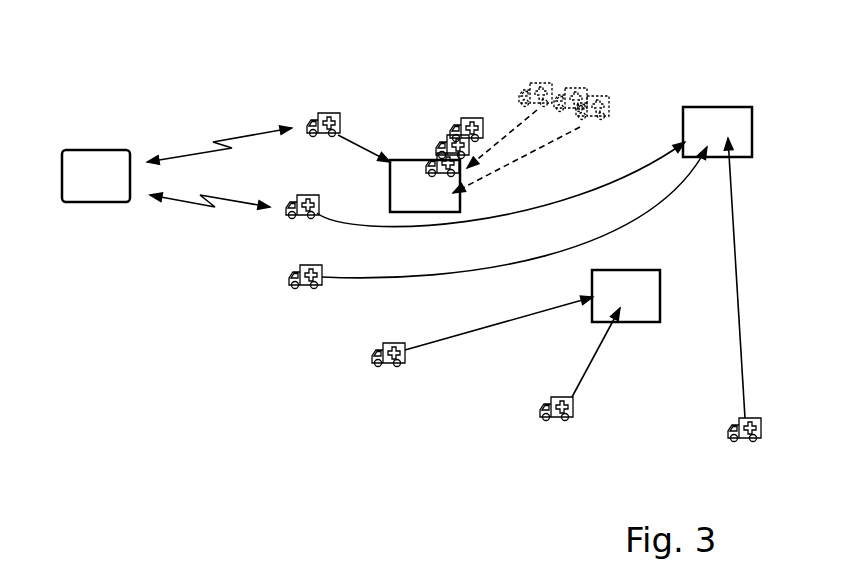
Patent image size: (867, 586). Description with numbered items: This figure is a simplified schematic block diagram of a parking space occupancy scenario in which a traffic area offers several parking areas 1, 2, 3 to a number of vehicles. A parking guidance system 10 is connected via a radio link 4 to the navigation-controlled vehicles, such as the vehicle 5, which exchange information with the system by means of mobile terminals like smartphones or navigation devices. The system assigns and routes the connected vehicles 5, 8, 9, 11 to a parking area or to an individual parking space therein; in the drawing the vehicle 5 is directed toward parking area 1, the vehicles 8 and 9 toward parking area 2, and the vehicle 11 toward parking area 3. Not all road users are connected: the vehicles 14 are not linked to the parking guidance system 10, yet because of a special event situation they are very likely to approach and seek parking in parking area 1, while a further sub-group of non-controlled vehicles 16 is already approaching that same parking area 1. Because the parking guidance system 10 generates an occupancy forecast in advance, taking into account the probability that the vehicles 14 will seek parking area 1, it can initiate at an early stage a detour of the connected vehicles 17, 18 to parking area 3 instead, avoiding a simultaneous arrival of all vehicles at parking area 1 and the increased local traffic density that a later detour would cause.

The parking area 1 is at (420, 160).
The parking area 2 is at (647, 323).
The parking area 3 is at (717, 107).
The radio link 4 is at (248, 140).
The vehicle 5 is at (329, 112).
The navigation-controlled vehicle 8 is at (388, 370).
The navigation-controlled vehicle 9 is at (553, 423).
The parking guidance system 10 is at (107, 150).
The navigation-controlled vehicle 11 is at (742, 445).
The vehicles 14 is at (590, 92).
The vehicles 16 is at (473, 120).
The vehicle 17 is at (310, 193).
The vehicle 18 is at (307, 266).